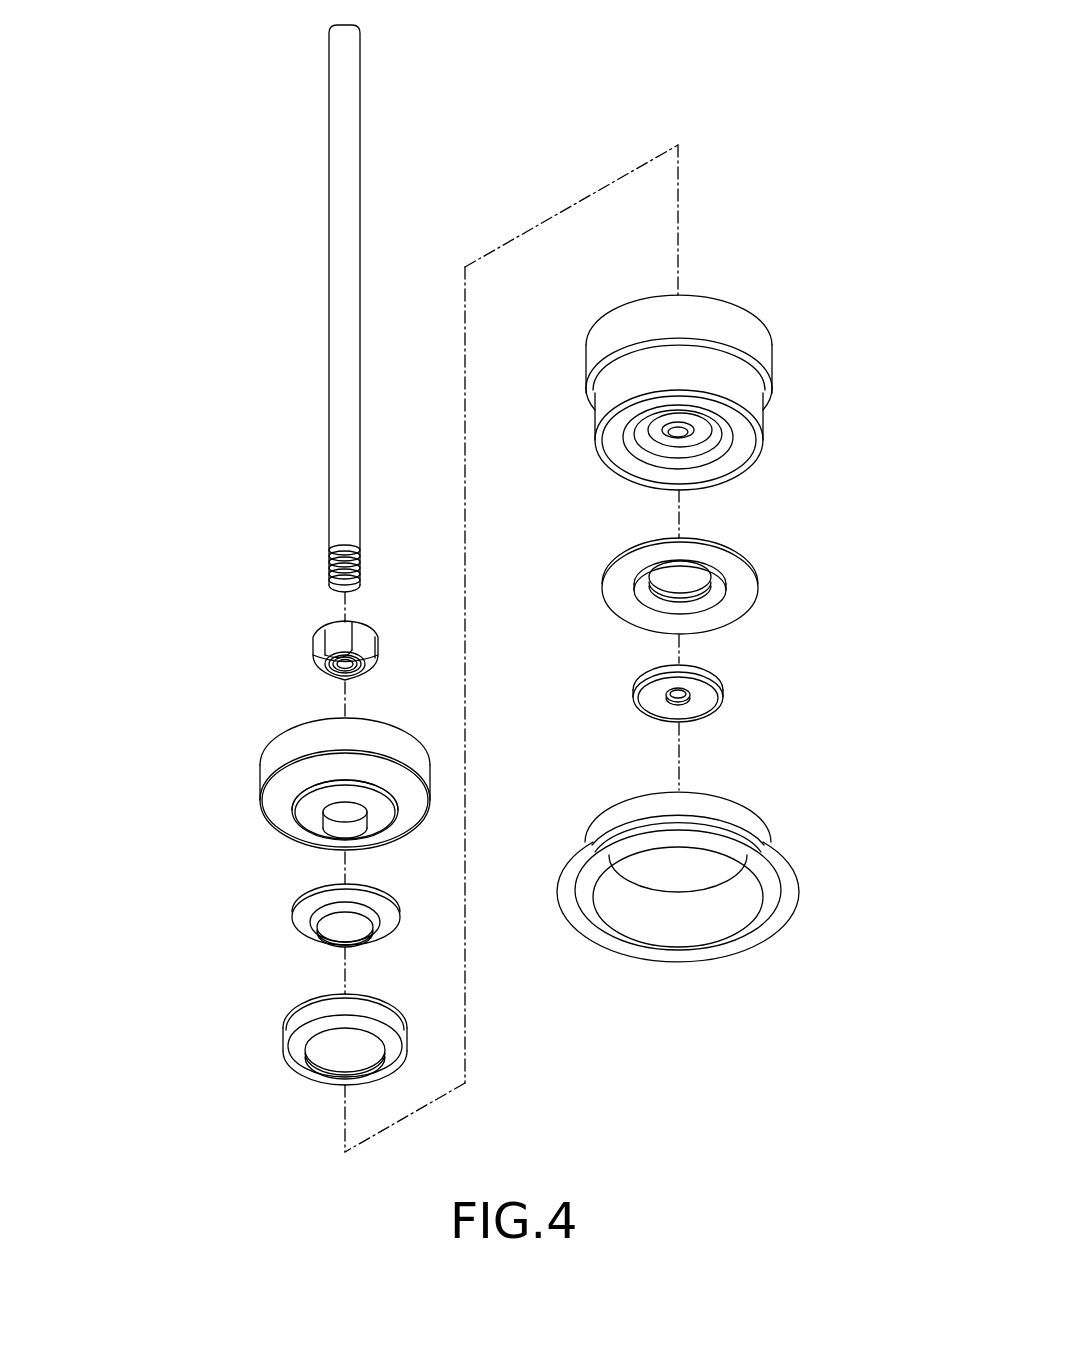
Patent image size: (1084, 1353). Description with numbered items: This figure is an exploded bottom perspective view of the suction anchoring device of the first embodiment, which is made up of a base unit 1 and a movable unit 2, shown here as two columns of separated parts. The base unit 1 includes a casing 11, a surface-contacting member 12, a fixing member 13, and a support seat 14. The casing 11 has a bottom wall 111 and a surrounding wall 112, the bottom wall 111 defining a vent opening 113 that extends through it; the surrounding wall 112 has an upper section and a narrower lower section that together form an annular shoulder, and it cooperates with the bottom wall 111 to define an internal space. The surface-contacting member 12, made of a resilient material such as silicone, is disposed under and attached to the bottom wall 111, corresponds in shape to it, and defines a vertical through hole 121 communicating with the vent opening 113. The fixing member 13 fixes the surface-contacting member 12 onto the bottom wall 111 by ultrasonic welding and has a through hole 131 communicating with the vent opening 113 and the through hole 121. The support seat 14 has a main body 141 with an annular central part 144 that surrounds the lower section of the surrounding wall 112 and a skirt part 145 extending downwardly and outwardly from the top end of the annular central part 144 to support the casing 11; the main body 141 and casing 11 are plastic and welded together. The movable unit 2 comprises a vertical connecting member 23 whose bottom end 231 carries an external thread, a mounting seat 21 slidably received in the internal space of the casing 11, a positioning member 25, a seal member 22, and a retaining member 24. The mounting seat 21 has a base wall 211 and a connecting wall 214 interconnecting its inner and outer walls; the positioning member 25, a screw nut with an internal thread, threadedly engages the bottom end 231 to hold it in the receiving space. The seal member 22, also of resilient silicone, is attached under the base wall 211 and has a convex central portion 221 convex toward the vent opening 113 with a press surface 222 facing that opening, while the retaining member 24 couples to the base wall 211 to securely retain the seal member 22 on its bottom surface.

The base unit 1 is at (844, 316).
The casing 11 is at (592, 357).
The bottom wall 111 is at (625, 443).
The surrounding wall 112 is at (766, 428).
The vent opening 113 is at (700, 438).
The surface-contacting member 12 is at (618, 594).
The vertical through hole 121 is at (667, 568).
The fixing member 13 is at (652, 690).
The through hole 131 is at (688, 698).
The support seat 14 is at (643, 878).
The main body 141 is at (598, 832).
The annular central part 144 is at (598, 899).
The skirt part 145 is at (612, 950).
The movable unit 2 is at (170, 172).
The mounting seat 21 is at (262, 776).
The base wall 211 is at (308, 820).
The connecting wall 214 is at (404, 793).
The seal member 22 is at (300, 906).
The convex central portion 221 is at (318, 922).
The press surface 222 is at (335, 937).
The connecting member 23 is at (347, 310).
The bottom end 231 is at (338, 566).
The retaining member 24 is at (285, 1035).
The positioning member 25 is at (318, 642).